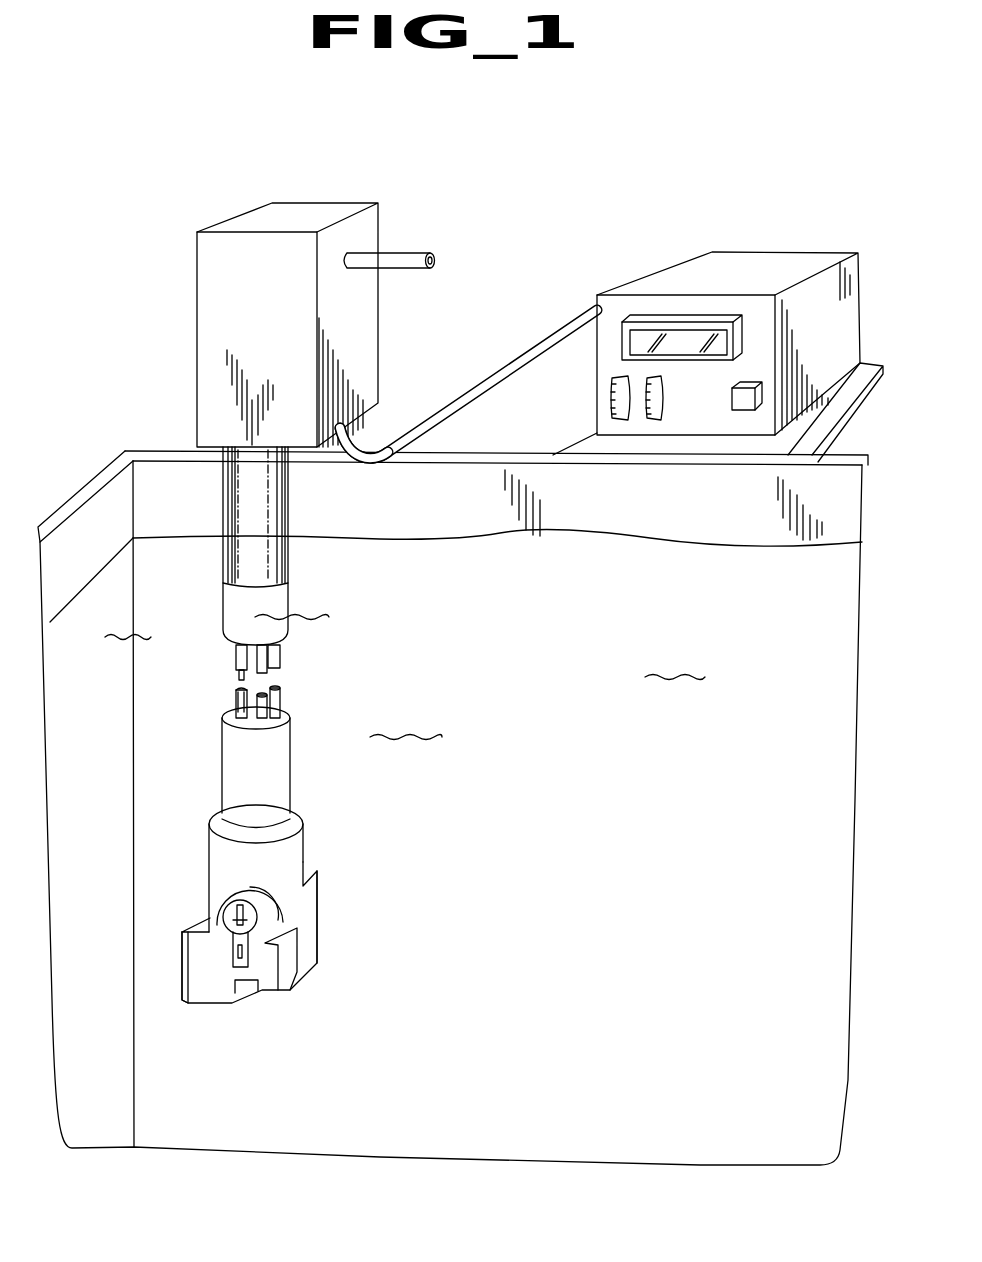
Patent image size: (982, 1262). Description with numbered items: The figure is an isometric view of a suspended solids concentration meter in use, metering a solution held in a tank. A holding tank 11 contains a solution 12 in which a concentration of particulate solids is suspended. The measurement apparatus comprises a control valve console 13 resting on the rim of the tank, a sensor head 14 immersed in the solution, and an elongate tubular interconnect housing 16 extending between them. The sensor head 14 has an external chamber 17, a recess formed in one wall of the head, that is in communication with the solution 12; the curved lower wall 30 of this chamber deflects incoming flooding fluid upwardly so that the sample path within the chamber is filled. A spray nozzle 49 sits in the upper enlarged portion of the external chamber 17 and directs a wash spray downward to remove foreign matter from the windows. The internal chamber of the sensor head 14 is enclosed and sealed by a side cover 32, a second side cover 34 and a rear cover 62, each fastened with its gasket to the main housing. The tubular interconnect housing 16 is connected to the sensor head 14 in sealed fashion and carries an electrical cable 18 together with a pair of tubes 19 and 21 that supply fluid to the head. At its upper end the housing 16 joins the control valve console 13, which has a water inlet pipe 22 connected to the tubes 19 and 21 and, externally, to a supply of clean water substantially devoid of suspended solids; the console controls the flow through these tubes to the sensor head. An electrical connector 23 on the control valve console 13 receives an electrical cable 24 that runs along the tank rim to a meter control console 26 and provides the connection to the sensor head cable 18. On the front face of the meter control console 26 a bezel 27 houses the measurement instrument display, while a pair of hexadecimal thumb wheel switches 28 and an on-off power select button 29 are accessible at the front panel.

The holding tank 11 is at (838, 458).
The solution 12 is at (385, 537).
The control valve console 13 is at (192, 312).
The sensor head 14 is at (327, 932).
The tubular interconnect housing 16 is at (227, 715).
The external chamber 17 is at (227, 915).
The electrical cable 18 is at (237, 690).
The tube 19 is at (281, 697).
The tube 21 is at (262, 694).
The water inlet pipe 22 is at (400, 263).
The electrical connector 23 is at (357, 423).
The electrical cable 24 is at (465, 396).
The meter control console 26 is at (772, 246).
The bezel 27 is at (622, 347).
The hexadecimal thumb wheel switches 28 is at (650, 380).
The on-off power select button 29 is at (732, 397).
The curved lower wall 30 is at (250, 984).
The side cover 32 is at (186, 998).
The side cover 34 is at (293, 972).
The spray nozzle 49 is at (232, 920).
The rear cover 62 is at (318, 888).